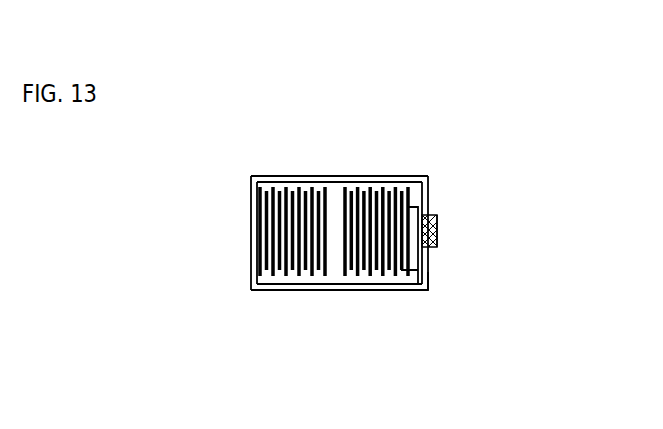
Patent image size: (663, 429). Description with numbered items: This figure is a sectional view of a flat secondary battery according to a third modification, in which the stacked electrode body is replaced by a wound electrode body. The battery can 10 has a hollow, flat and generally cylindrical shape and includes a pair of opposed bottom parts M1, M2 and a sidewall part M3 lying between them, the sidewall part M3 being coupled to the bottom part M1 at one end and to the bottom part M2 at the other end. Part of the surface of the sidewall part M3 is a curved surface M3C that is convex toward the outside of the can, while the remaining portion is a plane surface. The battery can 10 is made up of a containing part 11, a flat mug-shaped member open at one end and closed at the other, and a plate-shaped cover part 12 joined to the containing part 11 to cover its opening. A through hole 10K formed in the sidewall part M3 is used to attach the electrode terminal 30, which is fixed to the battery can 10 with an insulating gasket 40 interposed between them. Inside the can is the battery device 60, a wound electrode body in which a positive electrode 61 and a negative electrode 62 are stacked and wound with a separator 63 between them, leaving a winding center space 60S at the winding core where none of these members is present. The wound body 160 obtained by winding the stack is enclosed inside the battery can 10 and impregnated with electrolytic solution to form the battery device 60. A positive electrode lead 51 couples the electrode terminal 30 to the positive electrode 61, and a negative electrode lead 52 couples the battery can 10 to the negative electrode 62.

The battery can 10 is at (252, 243).
The through hole 10K is at (438, 240).
The containing part 11 is at (417, 290).
The cover part 12 is at (253, 182).
The electrode terminal 30 is at (437, 222).
The gasket 40 is at (437, 232).
The positive electrode lead 51 is at (430, 208).
The negative electrode lead 52 is at (428, 282).
The battery device 60 is at (287, 286).
The wound body 160 is at (336, 253).
The winding center space 60S is at (334, 185).
The positive electrode 61 is at (347, 261).
The negative electrode 62 is at (358, 270).
The separator 63 is at (405, 270).
The bottom part M1 is at (385, 177).
The bottom part M2 is at (268, 291).
The sidewall part M3 is at (430, 264).
The curved surface M3C is at (252, 263).